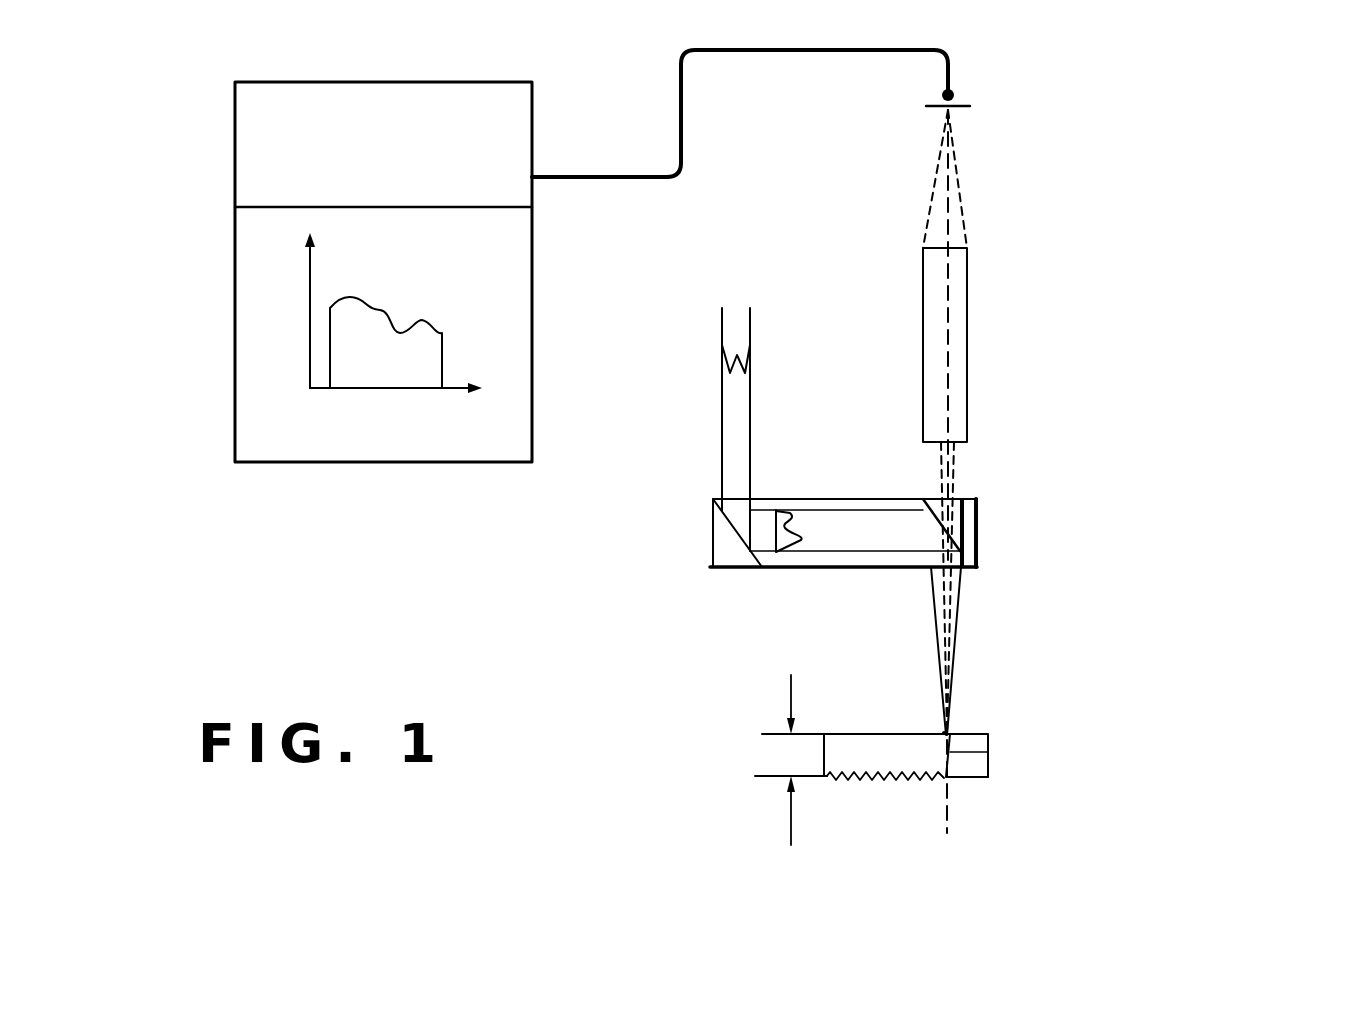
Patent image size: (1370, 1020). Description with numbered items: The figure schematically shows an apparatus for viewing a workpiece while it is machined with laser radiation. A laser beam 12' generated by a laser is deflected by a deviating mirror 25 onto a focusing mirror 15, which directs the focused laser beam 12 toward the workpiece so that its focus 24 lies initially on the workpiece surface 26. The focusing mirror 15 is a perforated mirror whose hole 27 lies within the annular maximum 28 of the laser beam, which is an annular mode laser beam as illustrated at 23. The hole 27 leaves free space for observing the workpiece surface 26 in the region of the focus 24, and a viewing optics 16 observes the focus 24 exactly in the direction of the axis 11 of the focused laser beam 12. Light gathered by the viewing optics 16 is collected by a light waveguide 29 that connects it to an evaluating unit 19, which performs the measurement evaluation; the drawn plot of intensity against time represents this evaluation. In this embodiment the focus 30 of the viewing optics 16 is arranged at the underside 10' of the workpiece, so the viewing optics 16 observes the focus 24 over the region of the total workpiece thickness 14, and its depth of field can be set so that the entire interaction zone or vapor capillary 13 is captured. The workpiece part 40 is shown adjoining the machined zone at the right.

The evaluating unit 19 is at (532, 365).
The light waveguide 29 is at (953, 68).
The viewing optics 16 is at (967, 348).
The focusing mirror 15 is at (978, 530).
The deviating mirror 25 is at (723, 550).
The hole 27 is at (930, 528).
The annular maximum 28 is at (797, 512).
The annular mode laser beam illustration 23 is at (720, 344).
The laser beam 12' is at (719, 393).
The focused laser beam 12 is at (1006, 651).
The vapor capillary 13 is at (955, 732).
The focus 24 is at (943, 732).
The workpiece thickness 14 is at (797, 757).
The work piece part 40 is at (988, 758).
The focus of the viewing optics 30 is at (947, 777).
The underside of the workpiece 10' is at (1013, 825).
The axis 11 is at (942, 817).
The workpiece surface 26 is at (842, 733).